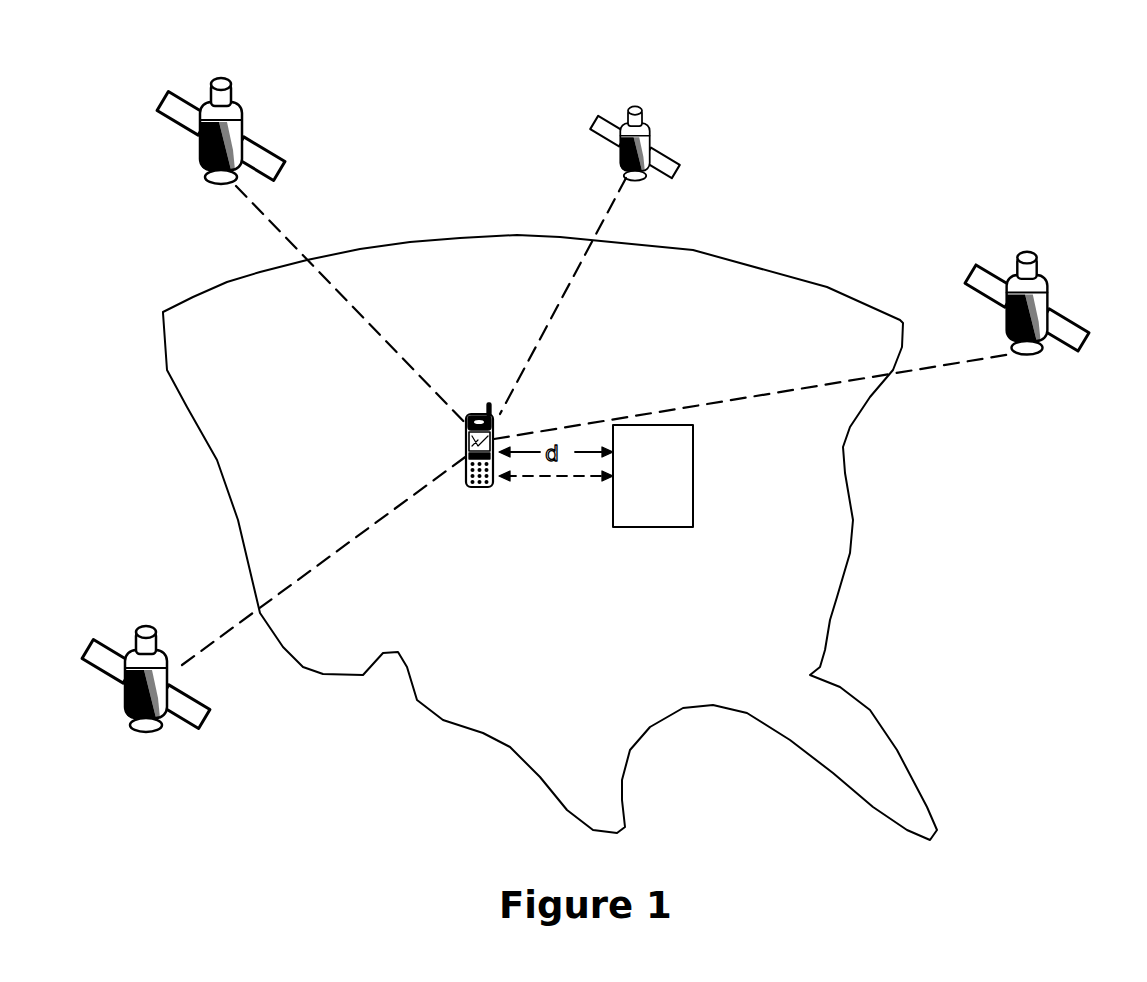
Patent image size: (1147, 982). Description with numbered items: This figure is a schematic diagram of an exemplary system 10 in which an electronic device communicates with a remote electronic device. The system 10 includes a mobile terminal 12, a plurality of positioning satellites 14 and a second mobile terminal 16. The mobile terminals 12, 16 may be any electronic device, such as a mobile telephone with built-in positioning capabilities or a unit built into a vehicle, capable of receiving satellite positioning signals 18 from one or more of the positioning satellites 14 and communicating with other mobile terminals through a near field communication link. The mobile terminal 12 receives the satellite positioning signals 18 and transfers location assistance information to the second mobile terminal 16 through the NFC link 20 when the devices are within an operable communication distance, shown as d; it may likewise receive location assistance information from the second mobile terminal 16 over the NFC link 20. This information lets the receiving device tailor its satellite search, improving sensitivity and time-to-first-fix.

The system 10 is at (108, 84).
The mobile terminal 12 is at (464, 441).
The positioning satellites 14 is at (243, 110).
The second mobile terminal 16 is at (653, 476).
The satellite positioning signals 18 is at (285, 237).
The NFC link 20 is at (556, 481).